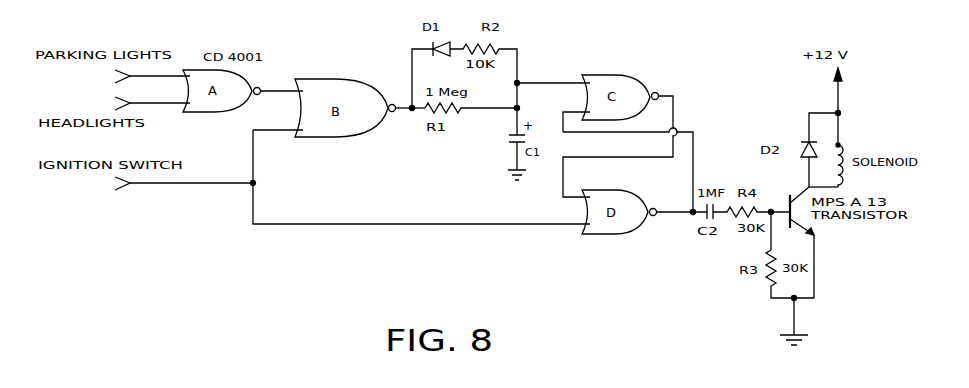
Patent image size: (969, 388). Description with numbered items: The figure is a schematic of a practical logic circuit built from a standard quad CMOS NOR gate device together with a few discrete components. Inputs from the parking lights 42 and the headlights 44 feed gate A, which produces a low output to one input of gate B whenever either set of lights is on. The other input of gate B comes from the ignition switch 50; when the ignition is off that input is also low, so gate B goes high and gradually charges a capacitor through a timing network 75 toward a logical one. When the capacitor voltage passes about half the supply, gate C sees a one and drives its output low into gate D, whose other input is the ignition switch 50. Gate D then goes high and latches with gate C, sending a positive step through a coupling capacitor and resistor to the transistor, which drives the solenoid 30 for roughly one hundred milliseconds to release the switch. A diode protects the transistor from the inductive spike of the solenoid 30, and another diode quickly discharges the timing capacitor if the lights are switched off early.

The parking lights 42 is at (153, 79).
The headlights 44 is at (160, 105).
The ignition switch 50 is at (151, 187).
The timing circuit 75 is at (468, 111).
The solenoid 30 is at (843, 150).